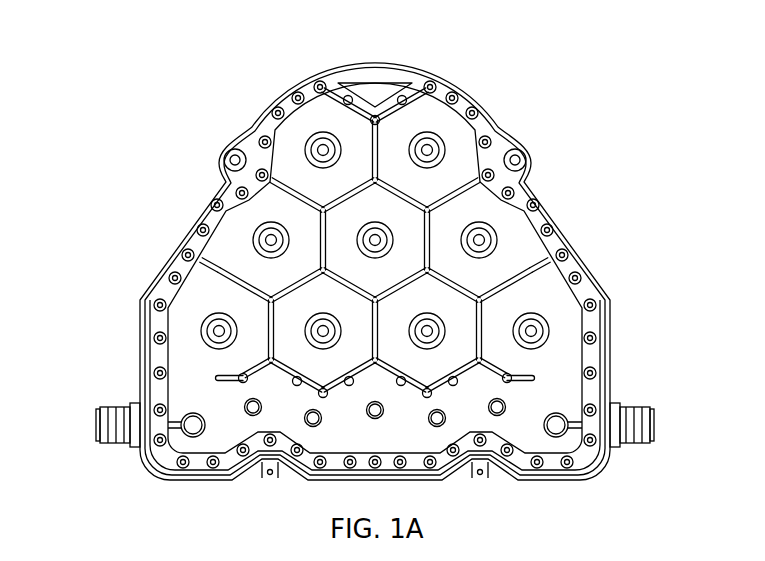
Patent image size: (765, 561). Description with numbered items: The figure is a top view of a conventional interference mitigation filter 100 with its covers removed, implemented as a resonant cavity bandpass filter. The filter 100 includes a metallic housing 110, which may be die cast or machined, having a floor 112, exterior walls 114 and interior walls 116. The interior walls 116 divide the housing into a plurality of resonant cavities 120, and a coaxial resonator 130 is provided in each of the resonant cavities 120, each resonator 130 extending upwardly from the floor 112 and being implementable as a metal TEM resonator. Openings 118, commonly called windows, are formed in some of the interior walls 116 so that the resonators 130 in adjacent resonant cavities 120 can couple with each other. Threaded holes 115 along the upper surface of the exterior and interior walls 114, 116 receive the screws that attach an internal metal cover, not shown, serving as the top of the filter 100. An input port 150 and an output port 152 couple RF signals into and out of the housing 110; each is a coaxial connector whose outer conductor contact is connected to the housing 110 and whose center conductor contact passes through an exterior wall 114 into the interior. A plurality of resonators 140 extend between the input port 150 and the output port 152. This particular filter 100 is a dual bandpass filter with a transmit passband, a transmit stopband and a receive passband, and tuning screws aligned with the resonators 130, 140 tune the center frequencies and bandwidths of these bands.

The interference mitigation filter 100 is at (182, 70).
The metallic housing 110 is at (478, 100).
The floor 112 is at (183, 295).
The exterior walls 114 is at (140, 303).
The threaded holes 115 is at (548, 238).
The interior walls 116 is at (545, 272).
The openings 118 is at (502, 152).
The resonant cavities 120 is at (318, 132).
The resonators 130 is at (258, 228).
The resonators 140 is at (564, 417).
The input port 150 is at (96, 408).
The output port 152 is at (655, 417).